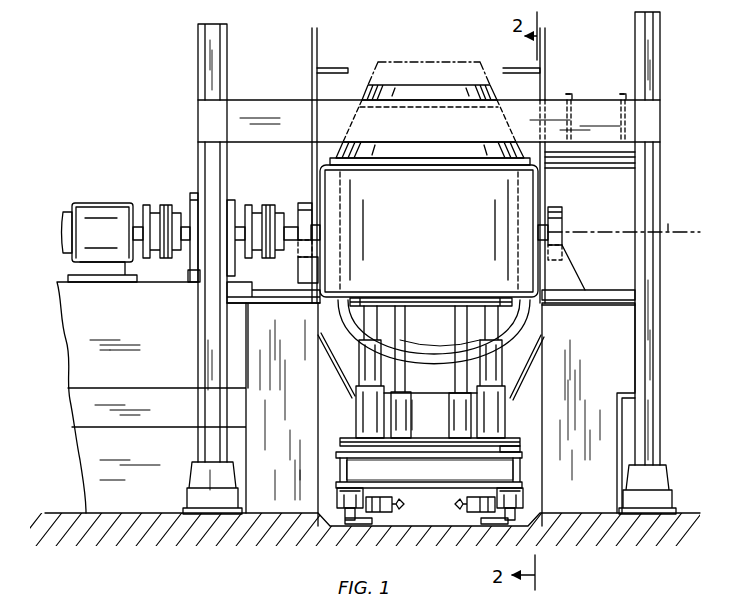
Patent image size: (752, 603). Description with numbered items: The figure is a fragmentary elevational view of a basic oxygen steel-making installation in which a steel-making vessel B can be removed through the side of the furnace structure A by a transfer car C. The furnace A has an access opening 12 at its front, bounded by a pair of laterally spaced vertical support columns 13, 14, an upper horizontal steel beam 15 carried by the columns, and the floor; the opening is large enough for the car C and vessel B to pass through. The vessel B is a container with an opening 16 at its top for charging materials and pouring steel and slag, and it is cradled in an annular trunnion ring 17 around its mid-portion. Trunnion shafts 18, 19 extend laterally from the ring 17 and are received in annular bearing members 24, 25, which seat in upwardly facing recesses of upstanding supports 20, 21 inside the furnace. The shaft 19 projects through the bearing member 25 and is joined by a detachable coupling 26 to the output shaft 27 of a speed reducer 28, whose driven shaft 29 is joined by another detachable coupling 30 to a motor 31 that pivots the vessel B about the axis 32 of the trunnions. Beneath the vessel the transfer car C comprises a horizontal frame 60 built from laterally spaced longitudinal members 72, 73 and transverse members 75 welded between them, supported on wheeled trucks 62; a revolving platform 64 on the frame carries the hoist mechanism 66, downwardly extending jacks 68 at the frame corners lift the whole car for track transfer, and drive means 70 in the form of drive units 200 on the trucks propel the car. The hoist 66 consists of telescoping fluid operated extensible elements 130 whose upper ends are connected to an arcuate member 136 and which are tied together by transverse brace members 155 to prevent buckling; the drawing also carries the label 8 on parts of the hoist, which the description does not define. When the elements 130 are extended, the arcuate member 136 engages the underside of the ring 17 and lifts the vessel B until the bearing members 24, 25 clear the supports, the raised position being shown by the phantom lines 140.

The furnace structure A is at (156, 130).
The steel-making vessel B is at (430, 240).
The transfer car C is at (516, 424).
The guide rods 8 is at (395, 390).
The access opening 12 is at (604, 517).
The vertical support column 13 is at (658, 343).
The vertical support column 14 is at (206, 355).
The upper horizontal support member 15 is at (275, 102).
The opening 16 is at (475, 85).
The annular trunnion ring 17 is at (545, 177).
The trunnion shaft 18 is at (548, 225).
The trunnion shaft 19 is at (322, 232).
The upstanding support 20 is at (592, 350).
The upstanding support 21 is at (305, 356).
The annular bearing member 24 is at (563, 218).
The annular bearing member 25 is at (308, 205).
The detachable coupling 26 is at (268, 205).
The output shaft 27 is at (299, 250).
The speed reducer 28 is at (192, 192).
The driven shaft 29 is at (170, 205).
The detachable coupling 30 is at (152, 265).
The motor 31 is at (86, 202).
The axis 32 is at (672, 222).
The frame 60 is at (524, 466).
The wheeled truck 62 is at (340, 514).
The revolving platform 64 is at (338, 442).
The hoist mechanism 66 is at (352, 420).
The jack 68 is at (340, 498).
The drive means 70 is at (484, 492).
The longitudinally extending member 72 is at (338, 455).
The longitudinally extending member 73 is at (522, 446).
The transverse member 75 is at (428, 481).
The extensible element 130 is at (357, 372).
The arcuate member 136 is at (422, 303).
The phantom lines 140 is at (404, 66).
The transverse brace member 155 is at (424, 412).
The drive unit 200 is at (398, 504).